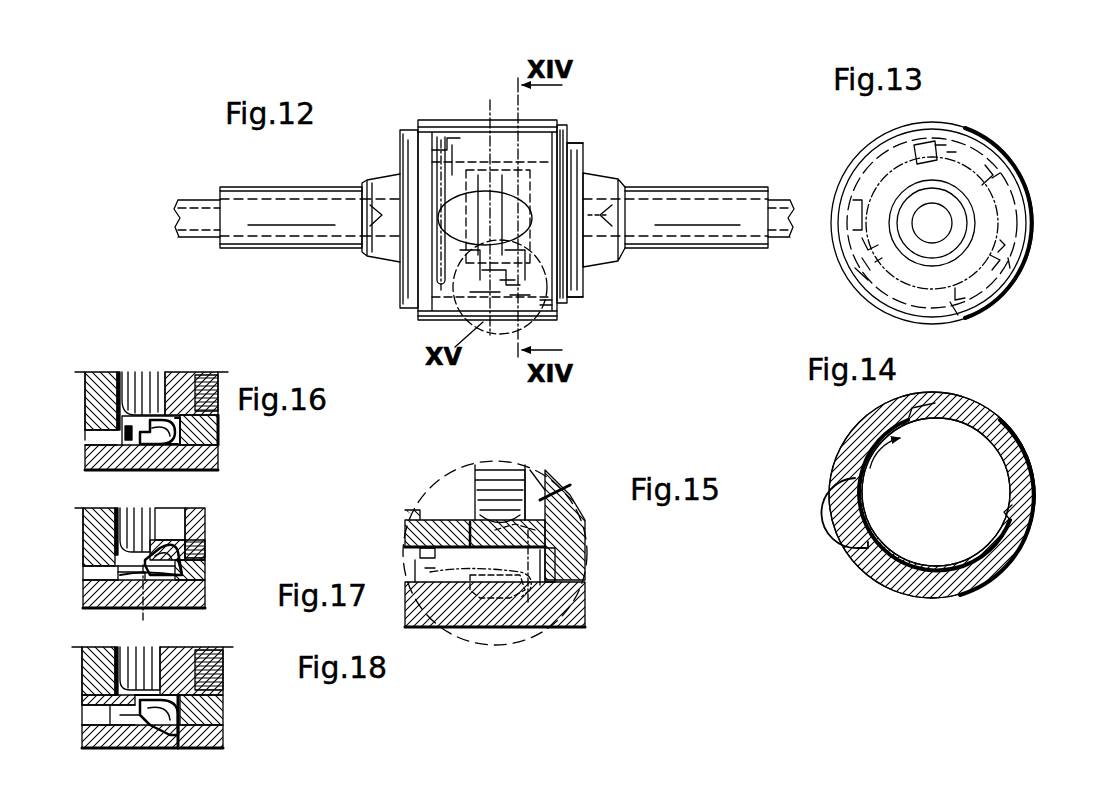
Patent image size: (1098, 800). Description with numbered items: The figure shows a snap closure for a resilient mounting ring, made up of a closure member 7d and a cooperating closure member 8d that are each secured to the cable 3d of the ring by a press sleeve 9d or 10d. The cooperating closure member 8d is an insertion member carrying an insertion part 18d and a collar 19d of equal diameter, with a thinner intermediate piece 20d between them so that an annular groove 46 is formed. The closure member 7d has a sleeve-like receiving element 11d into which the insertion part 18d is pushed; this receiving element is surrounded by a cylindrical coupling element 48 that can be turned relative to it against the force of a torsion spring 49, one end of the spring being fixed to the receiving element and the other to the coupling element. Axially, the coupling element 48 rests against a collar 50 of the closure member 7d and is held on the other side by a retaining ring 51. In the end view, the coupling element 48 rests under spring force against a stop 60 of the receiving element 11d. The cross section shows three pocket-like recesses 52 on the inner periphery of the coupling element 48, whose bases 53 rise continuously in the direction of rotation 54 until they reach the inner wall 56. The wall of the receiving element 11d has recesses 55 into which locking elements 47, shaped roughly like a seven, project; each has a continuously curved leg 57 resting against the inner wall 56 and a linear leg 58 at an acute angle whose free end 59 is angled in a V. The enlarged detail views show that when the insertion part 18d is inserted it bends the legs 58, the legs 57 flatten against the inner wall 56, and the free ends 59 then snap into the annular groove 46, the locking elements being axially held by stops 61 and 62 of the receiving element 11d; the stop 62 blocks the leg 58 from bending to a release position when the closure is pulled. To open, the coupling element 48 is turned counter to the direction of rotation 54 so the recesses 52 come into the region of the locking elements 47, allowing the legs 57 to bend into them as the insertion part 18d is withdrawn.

In FIG. 12, the cable 3d is at (197, 230).
In FIG. 12, the press sleeve 9d is at (240, 250).
In FIG. 12, the closure member 7d is at (372, 270).
In FIG. 12, the receiving element 11d is at (414, 293).
In FIG. 15, the receiving element 11d is at (445, 537).
In FIG. 16, the receiving element 11d is at (133, 378).
In FIG. 17, the receiving element 11d is at (92, 532).
In FIG. 18, the receiving element 11d is at (212, 708).
In FIG. 12, the collar 50 is at (412, 152).
In FIG. 12, the coupling element 48 is at (420, 125).
In FIG. 13, the coupling element 48 is at (868, 157).
In FIG. 14, the coupling element 48 is at (992, 425).
In FIG. 15, the coupling element 48 is at (469, 612).
In FIG. 16, the coupling element 48 is at (214, 450).
In FIG. 17, the coupling element 48 is at (130, 525).
In FIG. 18, the coupling element 48 is at (225, 733).
In FIG. 12, the torsion spring 49 is at (440, 132).
In FIG. 13, the torsion spring 49 is at (1008, 178).
In FIG. 12, the insertion part 18d is at (493, 213).
In FIG. 16, the insertion part 18d is at (146, 386).
In FIG. 18, the insertion part 18d is at (185, 667).
In FIG. 12, the annular groove 46 is at (566, 126).
In FIG. 17, the annular groove 46 is at (173, 548).
In FIG. 12, the collar 19d is at (590, 186).
In FIG. 12, the cooperating closure member 8d is at (604, 198).
In FIG. 12, the intermediate piece 20d is at (600, 272).
In FIG. 12, the press sleeve 10d is at (712, 250).
In FIG. 12, the retaining ring 51 is at (588, 272).
In FIG. 12, the pocket-like recesses 52 is at (559, 313).
In FIG. 14, the pocket-like recesses 52 is at (1018, 515).
In FIG. 15, the pocket-like recesses 52 is at (560, 612).
In FIG. 12, the locking elements 47 is at (493, 328).
In FIG. 15, the locking elements 47 is at (548, 565).
In FIG. 16, the locking elements 47 is at (106, 378).
In FIG. 17, the locking elements 47 is at (187, 566).
In FIG. 18, the locking elements 47 is at (181, 745).
In FIG. 13, the stop 60 is at (1008, 235).
In FIG. 14, the direction of rotation 54 is at (878, 450).
In FIG. 14, the inner wall 56 is at (990, 468).
In FIG. 15, the inner wall 56 is at (450, 582).
In FIG. 16, the inner wall 56 is at (88, 438).
In FIG. 14, the bases 53 is at (1000, 555).
In FIG. 15, the recesses 55 is at (476, 528).
In FIG. 16, the recesses 55 is at (173, 418).
In FIG. 18, the recesses 55 is at (90, 698).
In FIG. 15, the free end 59 is at (560, 500).
In FIG. 17, the free end 59 is at (173, 536).
In FIG. 15, the leg 58 is at (532, 560).
In FIG. 16, the leg 58 is at (177, 448).
In FIG. 17, the leg 58 is at (192, 570).
In FIG. 15, the leg 57 is at (506, 592).
In FIG. 16, the leg 57 is at (142, 450).
In FIG. 17, the leg 57 is at (149, 602).
In FIG. 18, the leg 57 is at (88, 732).
In FIG. 17, the stop 61 is at (85, 603).
In FIG. 17, the stop 62 is at (200, 590).